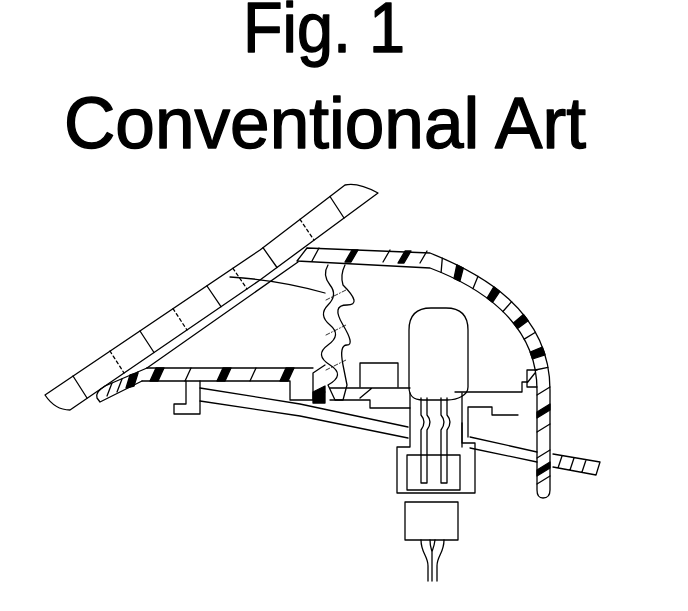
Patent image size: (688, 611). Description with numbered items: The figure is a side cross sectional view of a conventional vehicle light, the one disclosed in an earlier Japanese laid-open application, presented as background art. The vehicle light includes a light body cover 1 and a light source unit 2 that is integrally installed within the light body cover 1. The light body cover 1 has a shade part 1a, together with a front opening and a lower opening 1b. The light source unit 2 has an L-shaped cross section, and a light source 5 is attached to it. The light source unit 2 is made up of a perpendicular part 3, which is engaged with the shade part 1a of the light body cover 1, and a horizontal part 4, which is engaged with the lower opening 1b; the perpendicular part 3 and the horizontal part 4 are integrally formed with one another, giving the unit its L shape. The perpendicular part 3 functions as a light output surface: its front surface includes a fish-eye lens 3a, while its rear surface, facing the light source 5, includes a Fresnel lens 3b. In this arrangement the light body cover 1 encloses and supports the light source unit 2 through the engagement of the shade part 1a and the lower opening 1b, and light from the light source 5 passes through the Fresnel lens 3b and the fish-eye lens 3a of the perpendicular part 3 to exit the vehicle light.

The light body cover 1 is at (486, 273).
The shade part 1a is at (247, 295).
The lower opening 1b is at (498, 428).
The light source unit 2 is at (358, 460).
The perpendicular part 3 is at (325, 337).
The fish-eye lens 3a is at (280, 316).
The Fresnel lens 3b is at (350, 311).
The horizontal part 4 is at (330, 404).
The light source 5 is at (472, 358).